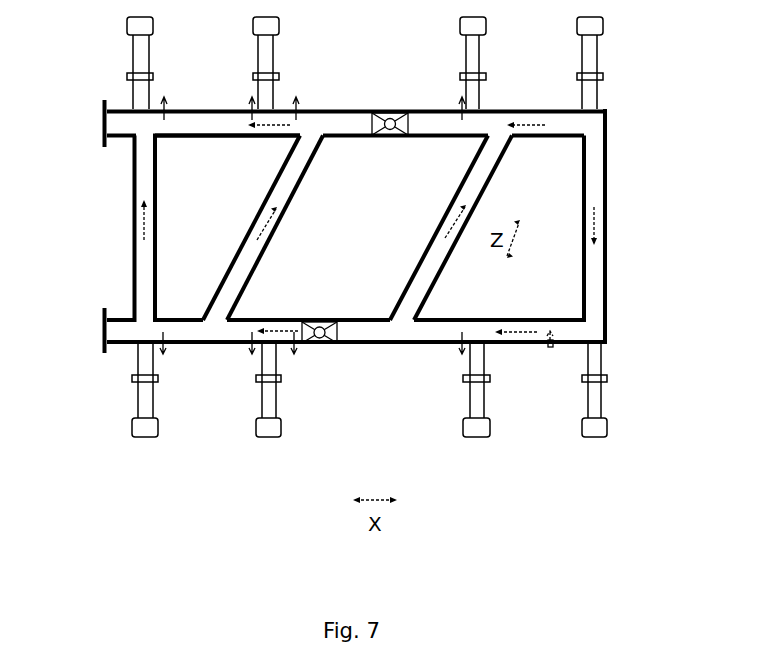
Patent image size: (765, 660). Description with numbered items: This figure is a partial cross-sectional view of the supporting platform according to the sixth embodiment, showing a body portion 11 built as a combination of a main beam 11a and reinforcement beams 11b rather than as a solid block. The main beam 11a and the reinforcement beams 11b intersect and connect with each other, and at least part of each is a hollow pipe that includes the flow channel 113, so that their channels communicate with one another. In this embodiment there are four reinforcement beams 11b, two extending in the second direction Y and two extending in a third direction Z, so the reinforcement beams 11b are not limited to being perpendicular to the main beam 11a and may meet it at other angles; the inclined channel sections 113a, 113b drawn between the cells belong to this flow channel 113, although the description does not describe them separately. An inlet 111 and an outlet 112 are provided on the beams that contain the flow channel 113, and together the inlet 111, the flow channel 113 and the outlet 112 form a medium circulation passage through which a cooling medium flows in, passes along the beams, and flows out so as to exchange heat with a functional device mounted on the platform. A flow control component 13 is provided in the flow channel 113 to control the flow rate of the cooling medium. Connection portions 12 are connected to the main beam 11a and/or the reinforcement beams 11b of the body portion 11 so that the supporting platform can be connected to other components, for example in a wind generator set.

The body portion 11 is at (682, 127).
The main beam 11a is at (582, 113).
The reinforcement beam 11b is at (606, 172).
The connection portion 12 is at (102, 328).
The flow control component 13 is at (389, 114).
The inlet 111 is at (549, 348).
The outlet 112 is at (167, 346).
The flow channel 113 is at (349, 247).
The first inclined wall 113a is at (243, 320).
The second inclined wall 113b is at (258, 250).